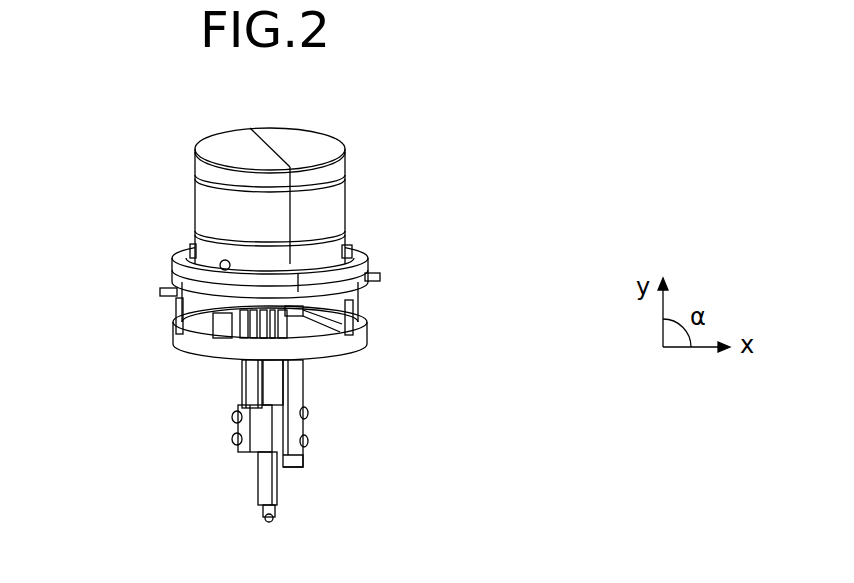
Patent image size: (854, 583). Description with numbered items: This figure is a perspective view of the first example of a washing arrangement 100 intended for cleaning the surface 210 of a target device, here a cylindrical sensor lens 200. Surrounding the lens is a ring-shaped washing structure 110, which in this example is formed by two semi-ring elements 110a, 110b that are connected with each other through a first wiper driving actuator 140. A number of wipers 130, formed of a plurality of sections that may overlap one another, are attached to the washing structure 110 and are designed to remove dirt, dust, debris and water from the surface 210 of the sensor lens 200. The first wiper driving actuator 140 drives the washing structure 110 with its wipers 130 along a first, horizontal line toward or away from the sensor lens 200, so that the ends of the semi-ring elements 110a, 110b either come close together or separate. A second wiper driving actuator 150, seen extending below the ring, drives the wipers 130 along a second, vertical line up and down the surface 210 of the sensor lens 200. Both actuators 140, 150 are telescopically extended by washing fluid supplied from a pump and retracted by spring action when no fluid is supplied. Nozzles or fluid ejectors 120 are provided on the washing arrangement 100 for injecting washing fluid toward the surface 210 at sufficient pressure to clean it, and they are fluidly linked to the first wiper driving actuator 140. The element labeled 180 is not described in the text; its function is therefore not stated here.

The washing arrangement 100 is at (478, 223).
The sensor lens 200 is at (343, 125).
The surface 210 is at (196, 191).
The washing structure 110 is at (388, 267).
The semi-ring element 110a is at (183, 256).
The semi-ring element 110b is at (353, 247).
The wipers 130 is at (193, 247).
The nozzles 120 is at (197, 271).
The first wiper driving actuator 140 is at (312, 285).
The base plate 180 is at (170, 347).
The second wiper driving actuator 150 is at (270, 482).